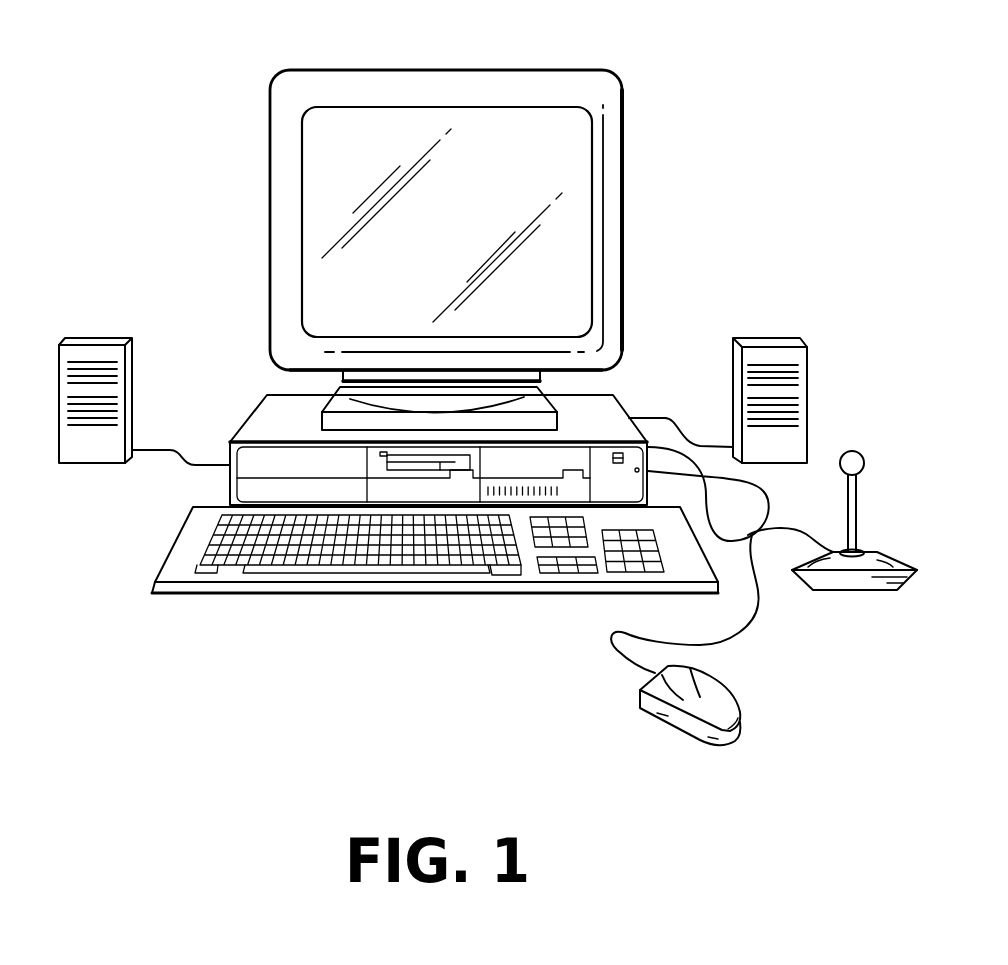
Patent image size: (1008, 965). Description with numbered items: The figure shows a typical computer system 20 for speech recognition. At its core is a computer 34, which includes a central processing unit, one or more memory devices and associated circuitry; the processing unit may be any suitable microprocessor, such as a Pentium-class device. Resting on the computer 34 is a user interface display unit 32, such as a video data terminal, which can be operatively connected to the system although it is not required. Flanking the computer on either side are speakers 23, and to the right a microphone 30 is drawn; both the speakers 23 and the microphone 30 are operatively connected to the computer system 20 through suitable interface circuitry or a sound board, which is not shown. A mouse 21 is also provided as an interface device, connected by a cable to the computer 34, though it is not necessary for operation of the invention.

The computer system 20 is at (645, 288).
The mouse 21 is at (708, 750).
The speakers 23 is at (90, 337).
The microphone 30 is at (828, 592).
The user interface display unit 32 is at (405, 70).
The computer 34 is at (248, 432).